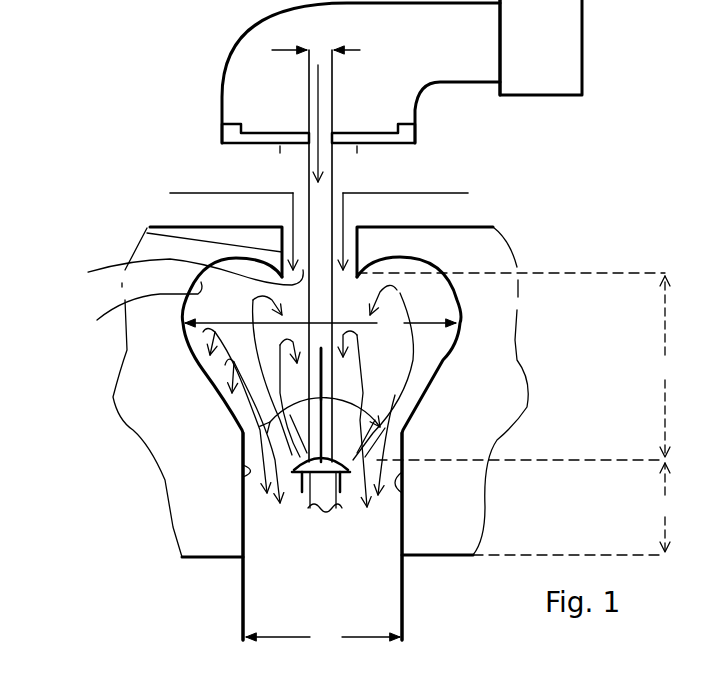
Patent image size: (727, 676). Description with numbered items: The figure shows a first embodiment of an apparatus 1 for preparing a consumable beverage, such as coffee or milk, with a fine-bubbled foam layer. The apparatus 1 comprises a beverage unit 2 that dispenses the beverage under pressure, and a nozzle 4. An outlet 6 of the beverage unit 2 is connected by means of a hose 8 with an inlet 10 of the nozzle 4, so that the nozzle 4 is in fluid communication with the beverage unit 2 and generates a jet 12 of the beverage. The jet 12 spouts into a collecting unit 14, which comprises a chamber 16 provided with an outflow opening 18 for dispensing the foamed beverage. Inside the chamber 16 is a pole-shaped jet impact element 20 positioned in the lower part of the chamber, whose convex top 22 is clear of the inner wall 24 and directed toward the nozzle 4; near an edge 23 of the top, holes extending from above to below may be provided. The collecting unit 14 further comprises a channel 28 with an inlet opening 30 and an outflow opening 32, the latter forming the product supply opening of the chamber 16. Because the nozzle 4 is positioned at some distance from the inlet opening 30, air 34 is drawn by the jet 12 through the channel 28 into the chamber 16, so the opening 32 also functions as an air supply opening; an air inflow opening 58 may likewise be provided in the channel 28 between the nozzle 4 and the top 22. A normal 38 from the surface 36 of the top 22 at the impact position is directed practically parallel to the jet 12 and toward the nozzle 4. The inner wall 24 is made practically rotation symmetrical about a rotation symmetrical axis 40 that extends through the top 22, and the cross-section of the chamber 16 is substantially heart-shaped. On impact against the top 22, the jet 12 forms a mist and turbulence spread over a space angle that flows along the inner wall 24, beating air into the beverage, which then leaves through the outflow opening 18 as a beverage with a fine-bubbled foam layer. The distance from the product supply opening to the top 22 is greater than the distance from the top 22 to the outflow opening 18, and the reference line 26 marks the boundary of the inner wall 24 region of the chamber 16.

The apparatus 1 is at (480, 404).
The beverage unit 2 is at (563, 50).
The nozzle 4 is at (324, 137).
The outlet 6 is at (500, 33).
The hose 8 is at (252, 42).
The inlet 10 is at (312, 134).
The jet 12 is at (308, 193).
The collecting unit 14 is at (360, 263).
The chamber 16 is at (240, 309).
The outflow opening 18 is at (257, 548).
The jet impact element 20 is at (315, 512).
The top 22 is at (323, 475).
The edge 23 is at (303, 483).
The inner wall 24 is at (203, 372).
The edge 26 is at (235, 438).
The channel 28 is at (147, 233).
The inlet opening 30 is at (289, 227).
The outflow opening 32 is at (158, 289).
The air 34 is at (175, 193).
The surface 36 is at (342, 475).
The normal 38 is at (415, 398).
The rotation symmetrical axis 40 is at (405, 390).
The air inflow opening 58 is at (272, 163).